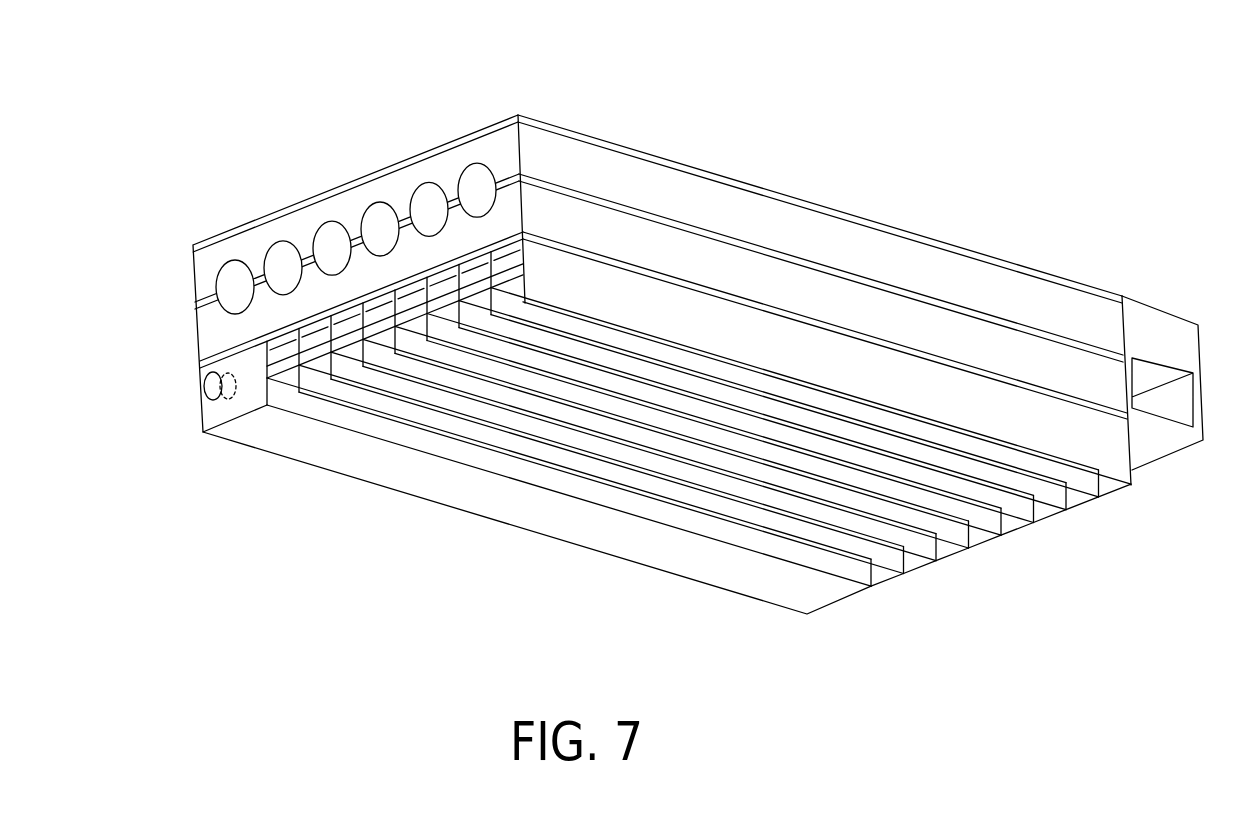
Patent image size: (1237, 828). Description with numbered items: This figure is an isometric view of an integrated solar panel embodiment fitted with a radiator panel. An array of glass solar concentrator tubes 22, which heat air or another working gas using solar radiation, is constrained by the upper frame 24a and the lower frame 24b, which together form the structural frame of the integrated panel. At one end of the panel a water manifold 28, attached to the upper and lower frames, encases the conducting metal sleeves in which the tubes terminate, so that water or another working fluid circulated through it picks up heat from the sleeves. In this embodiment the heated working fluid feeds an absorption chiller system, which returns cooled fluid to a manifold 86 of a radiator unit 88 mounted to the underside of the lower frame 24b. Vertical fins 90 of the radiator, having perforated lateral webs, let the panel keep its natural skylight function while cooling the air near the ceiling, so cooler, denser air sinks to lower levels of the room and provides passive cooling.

The solar concentrator tubes 22 is at (475, 182).
The upper frame 24a is at (680, 185).
The lower frame 24b is at (773, 270).
The water manifold 28 is at (1176, 340).
The manifold 86 is at (250, 396).
The radiator unit 88 is at (456, 520).
The vertical fins 90 is at (597, 407).